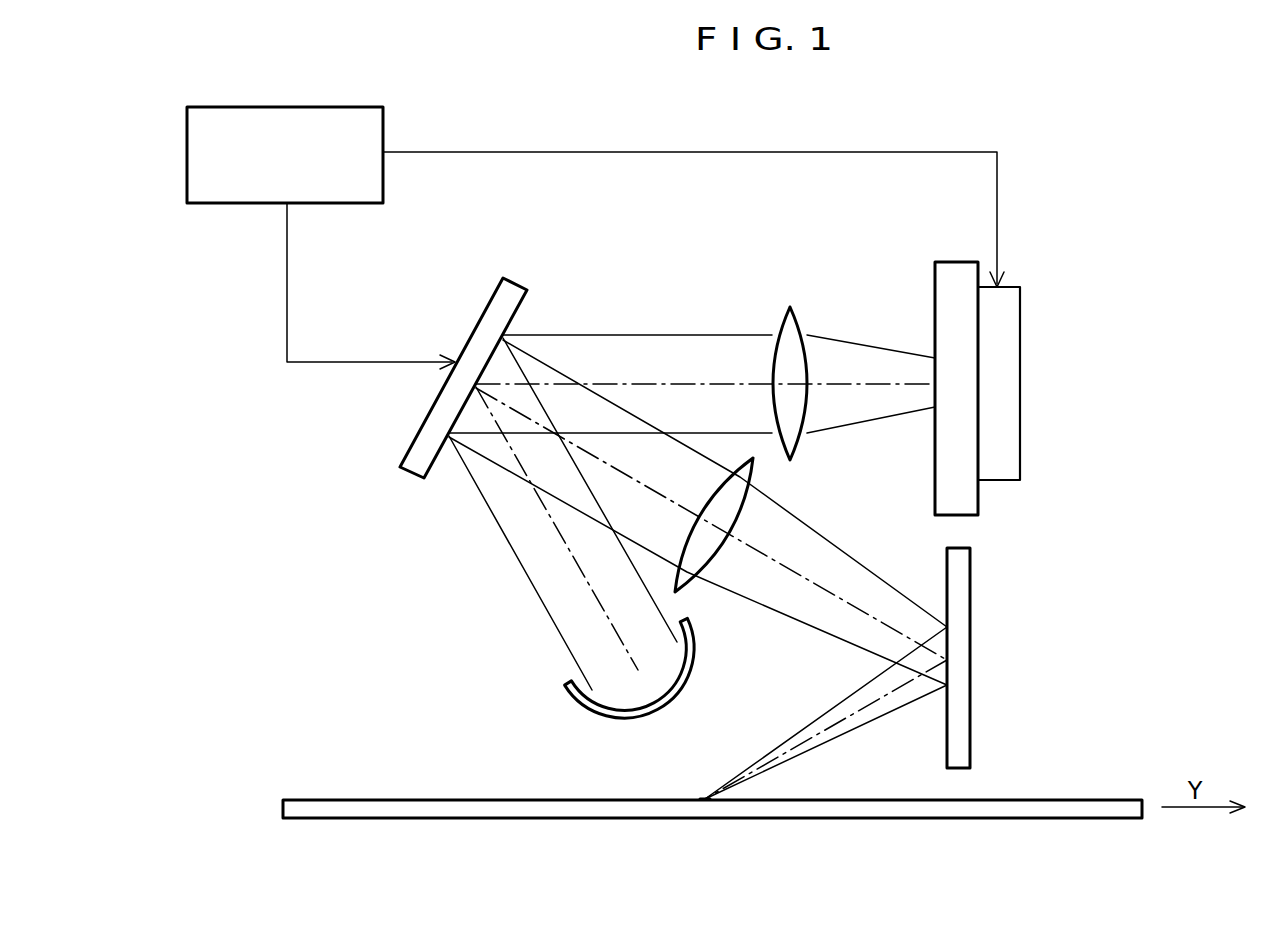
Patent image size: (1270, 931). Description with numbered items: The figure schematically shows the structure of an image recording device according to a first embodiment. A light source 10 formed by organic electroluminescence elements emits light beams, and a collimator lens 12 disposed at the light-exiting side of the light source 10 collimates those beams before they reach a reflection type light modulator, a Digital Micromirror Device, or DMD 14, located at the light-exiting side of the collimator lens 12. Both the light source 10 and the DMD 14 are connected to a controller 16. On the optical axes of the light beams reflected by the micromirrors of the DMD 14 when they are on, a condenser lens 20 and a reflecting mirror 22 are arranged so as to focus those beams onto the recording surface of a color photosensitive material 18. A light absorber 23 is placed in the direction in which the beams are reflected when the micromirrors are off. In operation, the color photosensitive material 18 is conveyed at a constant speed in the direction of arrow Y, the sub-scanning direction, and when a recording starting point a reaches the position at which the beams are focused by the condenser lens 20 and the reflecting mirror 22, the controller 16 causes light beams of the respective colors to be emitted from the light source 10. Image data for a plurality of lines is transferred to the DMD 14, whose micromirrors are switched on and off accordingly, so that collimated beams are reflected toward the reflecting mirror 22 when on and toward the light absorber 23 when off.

The light source 10 is at (1010, 366).
The collimator lens 12 is at (796, 318).
The reflection type light modulator (DMD) 14 is at (489, 318).
The controller 16 is at (384, 106).
The color photosensitive material 18 is at (775, 811).
The condenser lens 20 is at (752, 474).
The reflecting mirror 22 is at (962, 584).
The light absorber 23 is at (618, 712).
The recording starting point a is at (700, 792).